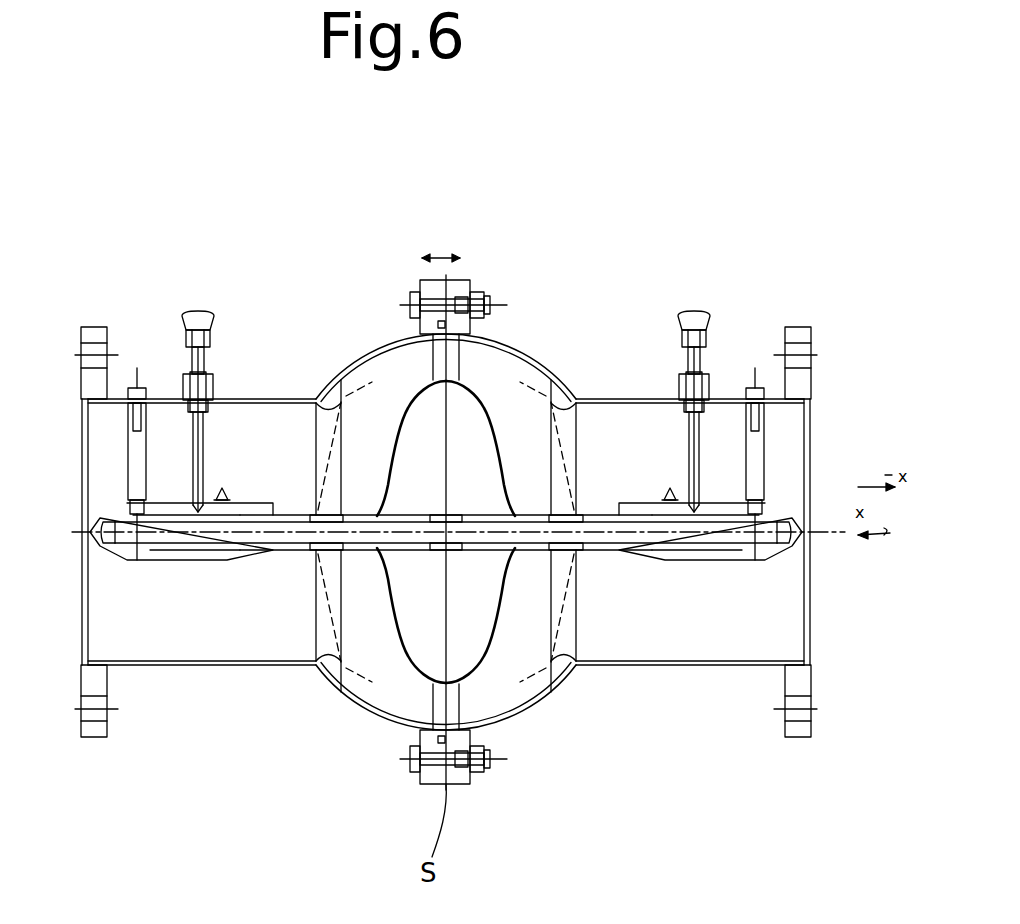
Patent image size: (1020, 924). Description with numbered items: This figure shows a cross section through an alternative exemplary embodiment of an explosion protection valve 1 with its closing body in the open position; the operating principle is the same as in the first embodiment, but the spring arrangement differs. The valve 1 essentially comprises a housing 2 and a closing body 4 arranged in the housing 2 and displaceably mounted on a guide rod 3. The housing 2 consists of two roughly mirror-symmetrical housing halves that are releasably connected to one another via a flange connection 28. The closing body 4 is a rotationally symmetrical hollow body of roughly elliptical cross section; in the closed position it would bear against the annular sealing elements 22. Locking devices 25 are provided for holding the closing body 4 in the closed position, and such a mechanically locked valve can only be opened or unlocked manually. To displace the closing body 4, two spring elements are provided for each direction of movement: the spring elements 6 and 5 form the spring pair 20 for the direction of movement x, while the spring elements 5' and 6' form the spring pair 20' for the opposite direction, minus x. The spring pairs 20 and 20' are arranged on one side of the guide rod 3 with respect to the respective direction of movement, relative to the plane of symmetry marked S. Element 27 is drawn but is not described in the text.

The explosion protection valve 1 is at (216, 190).
The housing 2 is at (543, 350).
The guide rod 3 is at (295, 528).
The closing body 4 is at (380, 728).
The spring element 5 is at (362, 590).
The spring element 5' is at (484, 675).
The spring element 6 is at (181, 633).
The spring element 6' is at (710, 645).
The spring pair 20 is at (446, 687).
The spring pair 20' is at (643, 828).
The annular sealing element 22 is at (565, 392).
The locking device 25 is at (180, 313).
The bolt 27 is at (128, 443).
The flange connection 28 is at (462, 290).